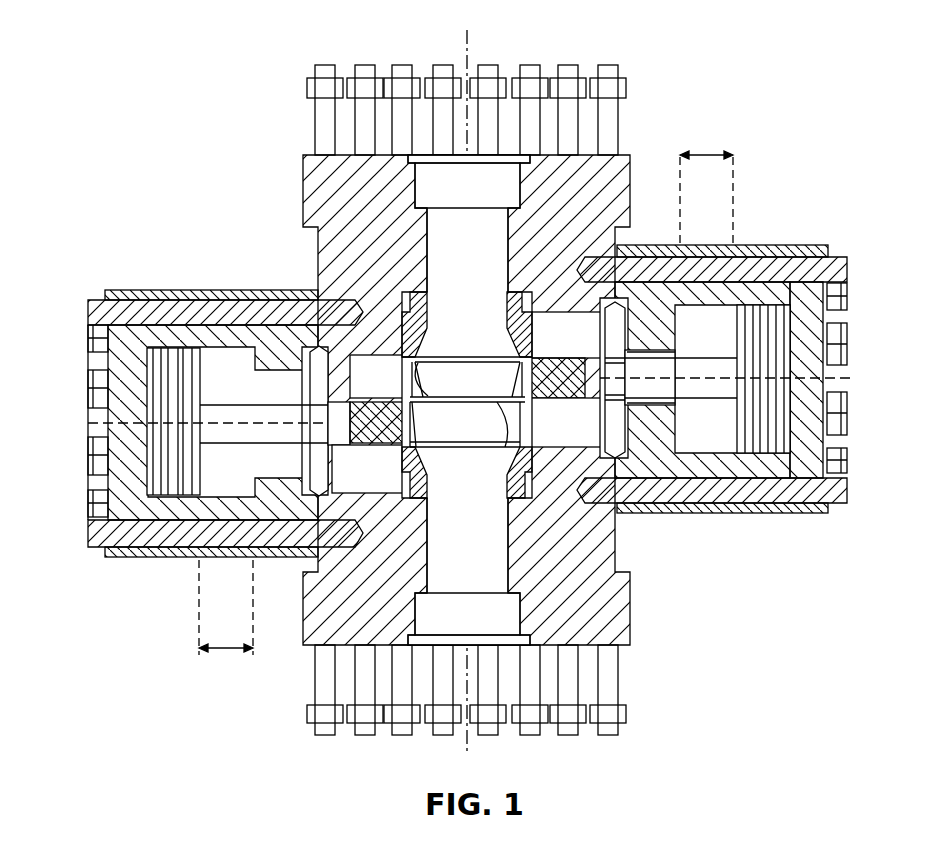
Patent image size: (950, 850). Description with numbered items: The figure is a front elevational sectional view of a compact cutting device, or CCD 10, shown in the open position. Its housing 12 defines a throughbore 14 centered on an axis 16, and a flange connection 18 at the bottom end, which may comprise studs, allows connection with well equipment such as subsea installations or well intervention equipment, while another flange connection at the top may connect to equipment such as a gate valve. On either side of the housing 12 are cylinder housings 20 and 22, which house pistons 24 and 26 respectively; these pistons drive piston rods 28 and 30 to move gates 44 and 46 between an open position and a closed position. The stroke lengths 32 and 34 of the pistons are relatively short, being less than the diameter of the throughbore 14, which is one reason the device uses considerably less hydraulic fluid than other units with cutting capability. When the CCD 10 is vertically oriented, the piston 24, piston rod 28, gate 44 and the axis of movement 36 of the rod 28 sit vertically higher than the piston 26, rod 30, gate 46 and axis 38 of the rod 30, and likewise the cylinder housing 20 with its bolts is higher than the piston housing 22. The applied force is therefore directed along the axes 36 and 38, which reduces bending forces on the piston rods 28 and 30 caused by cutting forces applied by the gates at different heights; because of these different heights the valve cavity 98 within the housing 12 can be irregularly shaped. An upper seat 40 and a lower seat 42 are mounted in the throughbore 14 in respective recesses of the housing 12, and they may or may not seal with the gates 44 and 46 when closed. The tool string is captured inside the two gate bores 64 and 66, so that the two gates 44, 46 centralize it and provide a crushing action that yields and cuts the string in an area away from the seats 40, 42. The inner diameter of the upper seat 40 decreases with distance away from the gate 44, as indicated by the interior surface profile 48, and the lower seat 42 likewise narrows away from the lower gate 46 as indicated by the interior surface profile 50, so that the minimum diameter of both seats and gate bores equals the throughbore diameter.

The compact cutting device 10 is at (468, 380).
The housing 12 is at (562, 220).
The throughbore 14 is at (452, 256).
The axis 16 is at (463, 540).
The flange connection 18 is at (615, 625).
The cylinder housing 20 is at (810, 248).
The cylinder housing 22 is at (120, 340).
The piston 24 is at (777, 377).
The piston 26 is at (152, 418).
The piston rod 28 is at (697, 393).
The piston rod 30 is at (138, 298).
The stroke length 32 is at (706, 153).
The stroke length 34 is at (227, 653).
The axis of movement 36 is at (647, 383).
The axis 38 is at (217, 402).
The upper seat 40 is at (417, 298).
The lower seat 42 is at (522, 482).
The gate 44 is at (517, 347).
The gate 46 is at (288, 547).
The interior surface profile 48 is at (512, 345).
The interior surface profile 50 is at (388, 412).
The gate bore 64 is at (473, 368).
The gate bore 66 is at (473, 428).
The valve cavity 98 is at (362, 440).